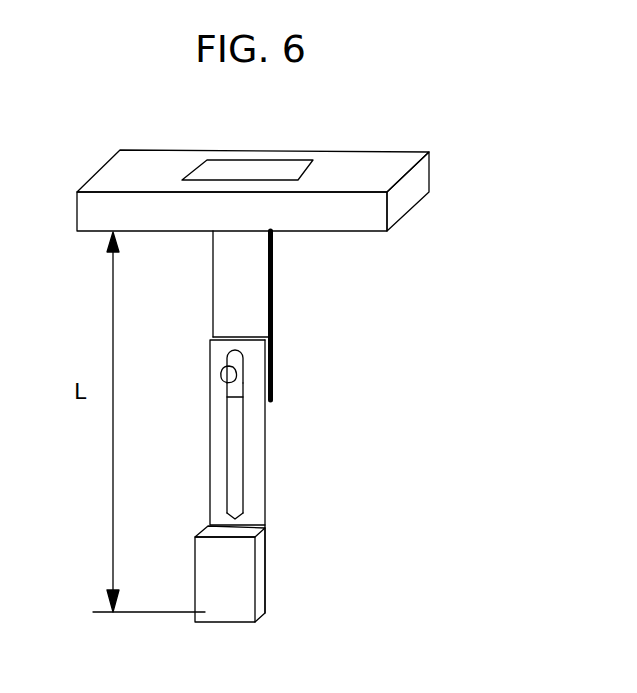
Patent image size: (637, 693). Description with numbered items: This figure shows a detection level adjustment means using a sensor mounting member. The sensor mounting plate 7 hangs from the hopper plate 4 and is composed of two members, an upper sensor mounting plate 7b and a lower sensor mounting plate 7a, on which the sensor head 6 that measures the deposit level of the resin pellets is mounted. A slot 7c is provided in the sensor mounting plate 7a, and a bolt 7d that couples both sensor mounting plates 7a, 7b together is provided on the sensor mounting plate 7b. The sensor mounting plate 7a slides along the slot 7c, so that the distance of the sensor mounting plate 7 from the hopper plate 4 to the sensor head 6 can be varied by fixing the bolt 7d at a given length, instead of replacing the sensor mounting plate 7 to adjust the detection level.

The hopper plate 4 is at (347, 155).
The sensor head 6 is at (247, 553).
The sensor mounting plate 7 is at (352, 422).
The sensor mounting plate 7a is at (257, 412).
The sensor mounting plate 7b is at (258, 293).
The slot 7c is at (233, 460).
The bolt 7d is at (228, 372).